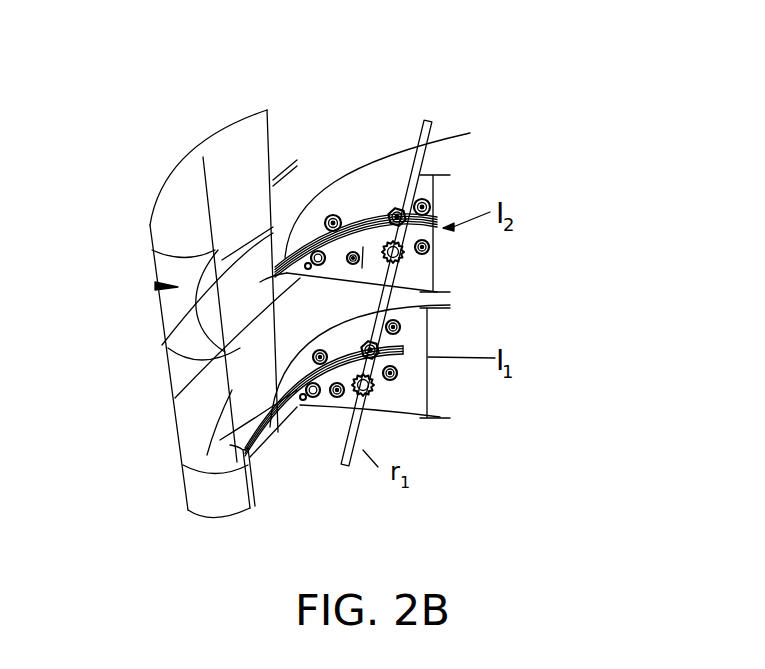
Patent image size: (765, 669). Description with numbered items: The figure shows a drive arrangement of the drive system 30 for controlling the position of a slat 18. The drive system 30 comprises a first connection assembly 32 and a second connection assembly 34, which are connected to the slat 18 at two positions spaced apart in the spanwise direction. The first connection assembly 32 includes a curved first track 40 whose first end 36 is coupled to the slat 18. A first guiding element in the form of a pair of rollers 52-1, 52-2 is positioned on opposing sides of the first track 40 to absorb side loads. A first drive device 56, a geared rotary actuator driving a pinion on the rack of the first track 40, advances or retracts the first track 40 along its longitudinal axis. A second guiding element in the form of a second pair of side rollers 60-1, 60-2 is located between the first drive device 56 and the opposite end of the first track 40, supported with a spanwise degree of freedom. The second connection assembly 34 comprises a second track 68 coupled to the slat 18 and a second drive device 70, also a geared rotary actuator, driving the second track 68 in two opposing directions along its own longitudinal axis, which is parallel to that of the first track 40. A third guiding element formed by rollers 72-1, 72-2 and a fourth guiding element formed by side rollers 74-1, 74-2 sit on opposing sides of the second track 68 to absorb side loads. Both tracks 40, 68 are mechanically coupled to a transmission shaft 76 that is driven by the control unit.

The slat 18 is at (230, 162).
The drive system 30 is at (453, 83).
The first connection assembly 32 is at (477, 397).
The second connection assembly 34 is at (563, 203).
The first end of the first track 36 is at (252, 508).
The first track 40 is at (270, 425).
The roller of the first guiding element 52-1 is at (334, 397).
The roller of the first guiding element 52-2 is at (245, 348).
The first drive device 56 is at (388, 415).
The side roller of the second guiding element 60-1 is at (398, 385).
The side roller of the second guiding element 60-2 is at (400, 328).
The second track 68 is at (287, 273).
The second drive device 70 is at (437, 268).
The roller of the third guiding element 72-1 is at (352, 262).
The roller of the third guiding element 72-2 is at (337, 214).
The side roller of the fourth guiding element 74-1 is at (433, 248).
The side roller of the fourth guiding element 74-2 is at (433, 197).
The transmission shaft 76 is at (425, 146).